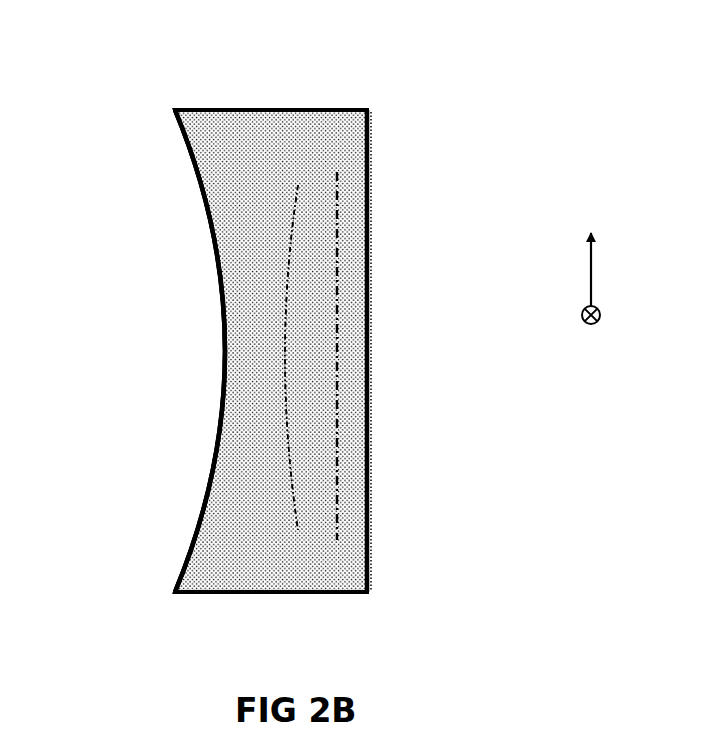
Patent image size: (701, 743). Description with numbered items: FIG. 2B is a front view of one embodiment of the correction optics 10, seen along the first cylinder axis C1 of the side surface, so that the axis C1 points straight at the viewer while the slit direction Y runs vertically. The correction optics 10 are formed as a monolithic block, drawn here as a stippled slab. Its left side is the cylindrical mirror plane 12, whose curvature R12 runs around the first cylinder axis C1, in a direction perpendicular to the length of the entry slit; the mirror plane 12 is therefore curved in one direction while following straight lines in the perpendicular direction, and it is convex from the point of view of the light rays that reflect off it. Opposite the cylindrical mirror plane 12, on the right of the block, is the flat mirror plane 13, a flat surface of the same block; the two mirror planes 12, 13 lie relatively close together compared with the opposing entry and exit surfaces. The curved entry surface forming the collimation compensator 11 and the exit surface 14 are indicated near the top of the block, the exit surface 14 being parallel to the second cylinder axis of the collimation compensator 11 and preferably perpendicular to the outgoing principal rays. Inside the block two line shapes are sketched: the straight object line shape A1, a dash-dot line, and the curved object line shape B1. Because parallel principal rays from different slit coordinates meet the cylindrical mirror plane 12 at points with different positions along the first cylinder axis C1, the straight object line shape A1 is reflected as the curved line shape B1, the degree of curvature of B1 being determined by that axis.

The correction optics 10 is at (117, 117).
The collimation compensator 11 is at (351, 159).
The cylindrical mirror plane 12 is at (198, 335).
The flat mirror plane 13 is at (383, 328).
The exit surface 14 is at (295, 333).
The curvature of the cylindrical mirror plane R12 is at (206, 243).
The straight object line shape A1 is at (337, 554).
The curved object line shape B1 is at (296, 554).
The first cylinder axis C1 is at (611, 260).